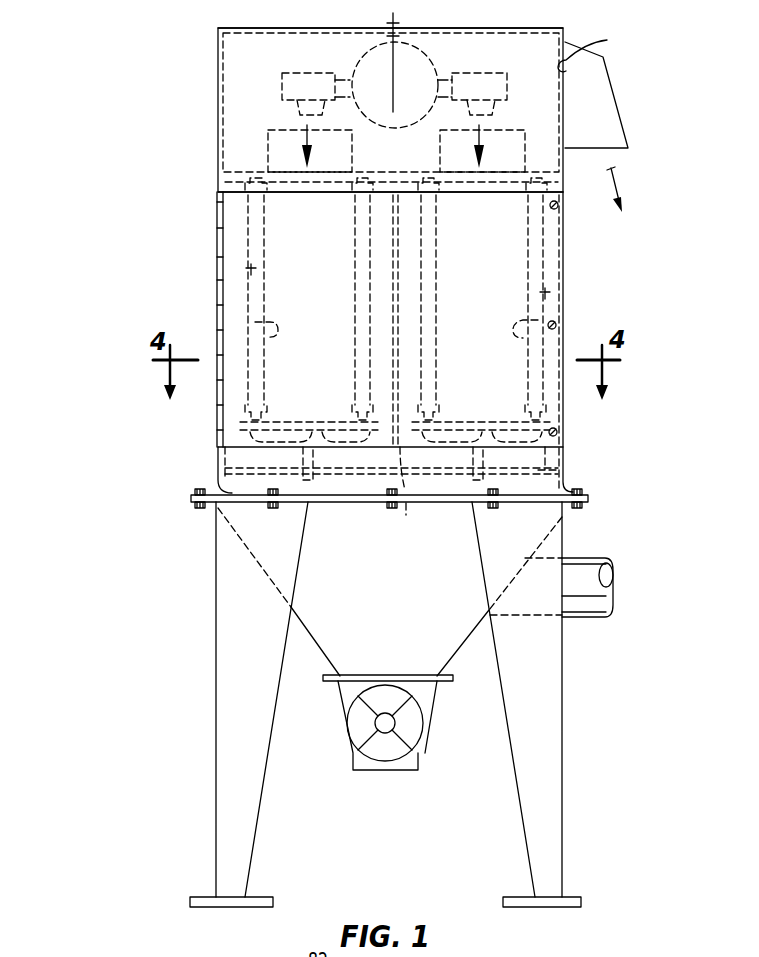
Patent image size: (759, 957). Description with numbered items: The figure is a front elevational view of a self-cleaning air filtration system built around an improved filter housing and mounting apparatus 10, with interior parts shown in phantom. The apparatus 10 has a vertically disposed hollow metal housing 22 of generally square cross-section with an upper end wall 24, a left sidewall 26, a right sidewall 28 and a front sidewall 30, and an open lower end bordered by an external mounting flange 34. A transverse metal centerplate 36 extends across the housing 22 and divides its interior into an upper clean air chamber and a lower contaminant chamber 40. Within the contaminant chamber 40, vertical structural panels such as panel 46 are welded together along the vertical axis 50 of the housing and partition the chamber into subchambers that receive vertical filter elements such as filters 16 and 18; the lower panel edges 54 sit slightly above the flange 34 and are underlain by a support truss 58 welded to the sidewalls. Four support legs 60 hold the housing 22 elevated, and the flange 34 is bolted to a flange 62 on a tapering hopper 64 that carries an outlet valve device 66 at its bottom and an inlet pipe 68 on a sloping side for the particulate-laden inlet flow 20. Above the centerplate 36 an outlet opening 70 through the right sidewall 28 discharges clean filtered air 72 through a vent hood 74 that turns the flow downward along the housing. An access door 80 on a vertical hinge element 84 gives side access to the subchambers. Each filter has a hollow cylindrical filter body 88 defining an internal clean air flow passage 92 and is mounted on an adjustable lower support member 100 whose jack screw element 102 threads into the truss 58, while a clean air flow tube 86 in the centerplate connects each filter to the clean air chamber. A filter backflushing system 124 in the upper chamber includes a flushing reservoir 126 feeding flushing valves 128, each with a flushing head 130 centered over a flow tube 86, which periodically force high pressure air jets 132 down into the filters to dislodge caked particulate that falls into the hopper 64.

The filter housing and mounting apparatus 10 is at (122, 128).
The filter element 16 is at (232, 250).
The filter element 18 is at (560, 250).
The inlet flow 20 is at (632, 587).
The housing 22 is at (205, 63).
The upper end wall 24 is at (217, 28).
The left sidewall 26 is at (217, 184).
The right sidewall 28 is at (565, 405).
The front sidewall 30 is at (260, 62).
The external mounting flange 34 is at (190, 497).
The centerplate 36 is at (222, 163).
The contaminant chamber 40 is at (232, 390).
The structural panel 46 is at (398, 327).
The vertical axis 50 is at (398, 97).
The lower panel edges 54 is at (406, 515).
The support truss 58 is at (562, 465).
The support legs 60 is at (216, 800).
The flange 62 is at (190, 503).
The hopper 64 is at (454, 651).
The outlet valve device 66 is at (428, 730).
The inlet pipe 68 is at (580, 558).
The outlet opening 70 is at (592, 48).
The clean filtered air 72 is at (624, 182).
The vent hood 74 is at (622, 105).
The access door 80 is at (315, 357).
The hinge element 84 is at (217, 305).
The clean air flow tube 86 is at (245, 147).
The filter body 88 is at (245, 270).
The internal clean air flow passage 92 is at (254, 323).
The adjustable lower support member 100 is at (235, 438).
The jack screw element 102 is at (313, 462).
The filter backflushing system 124 is at (426, 40).
The flushing reservoir 126 is at (372, 49).
The flushing valves 128 is at (282, 86).
The flushing head 130 is at (296, 106).
The high pressure air jets 132 is at (310, 139).